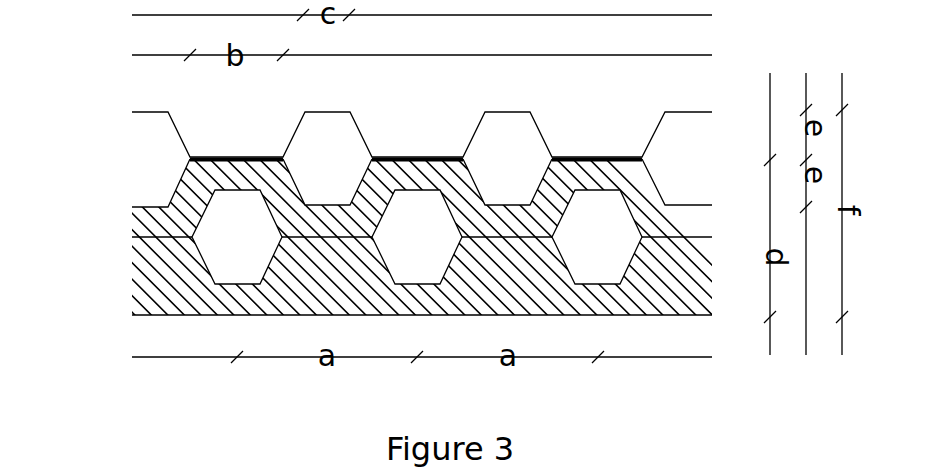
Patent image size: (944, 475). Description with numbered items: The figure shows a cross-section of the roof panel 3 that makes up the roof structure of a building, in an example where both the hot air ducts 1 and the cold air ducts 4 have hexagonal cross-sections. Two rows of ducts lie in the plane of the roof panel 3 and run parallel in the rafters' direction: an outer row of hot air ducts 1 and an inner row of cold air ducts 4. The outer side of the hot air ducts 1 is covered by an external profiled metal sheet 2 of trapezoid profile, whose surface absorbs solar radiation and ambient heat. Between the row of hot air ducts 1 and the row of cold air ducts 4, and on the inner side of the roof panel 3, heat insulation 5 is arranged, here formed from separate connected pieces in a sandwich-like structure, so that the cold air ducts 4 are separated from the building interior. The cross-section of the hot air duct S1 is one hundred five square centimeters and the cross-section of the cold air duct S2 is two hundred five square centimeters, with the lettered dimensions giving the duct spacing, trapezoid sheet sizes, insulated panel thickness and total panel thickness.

The hot air duct 1 is at (508, 143).
The metal sheet 2 is at (685, 110).
The roof panel 3 is at (690, 239).
The cold air duct 4 is at (598, 238).
The heat insulation 5 is at (162, 272).
The cross-section of the hot air duct S1 is at (327, 172).
The cross-section of cold air duct S2 is at (417, 237).